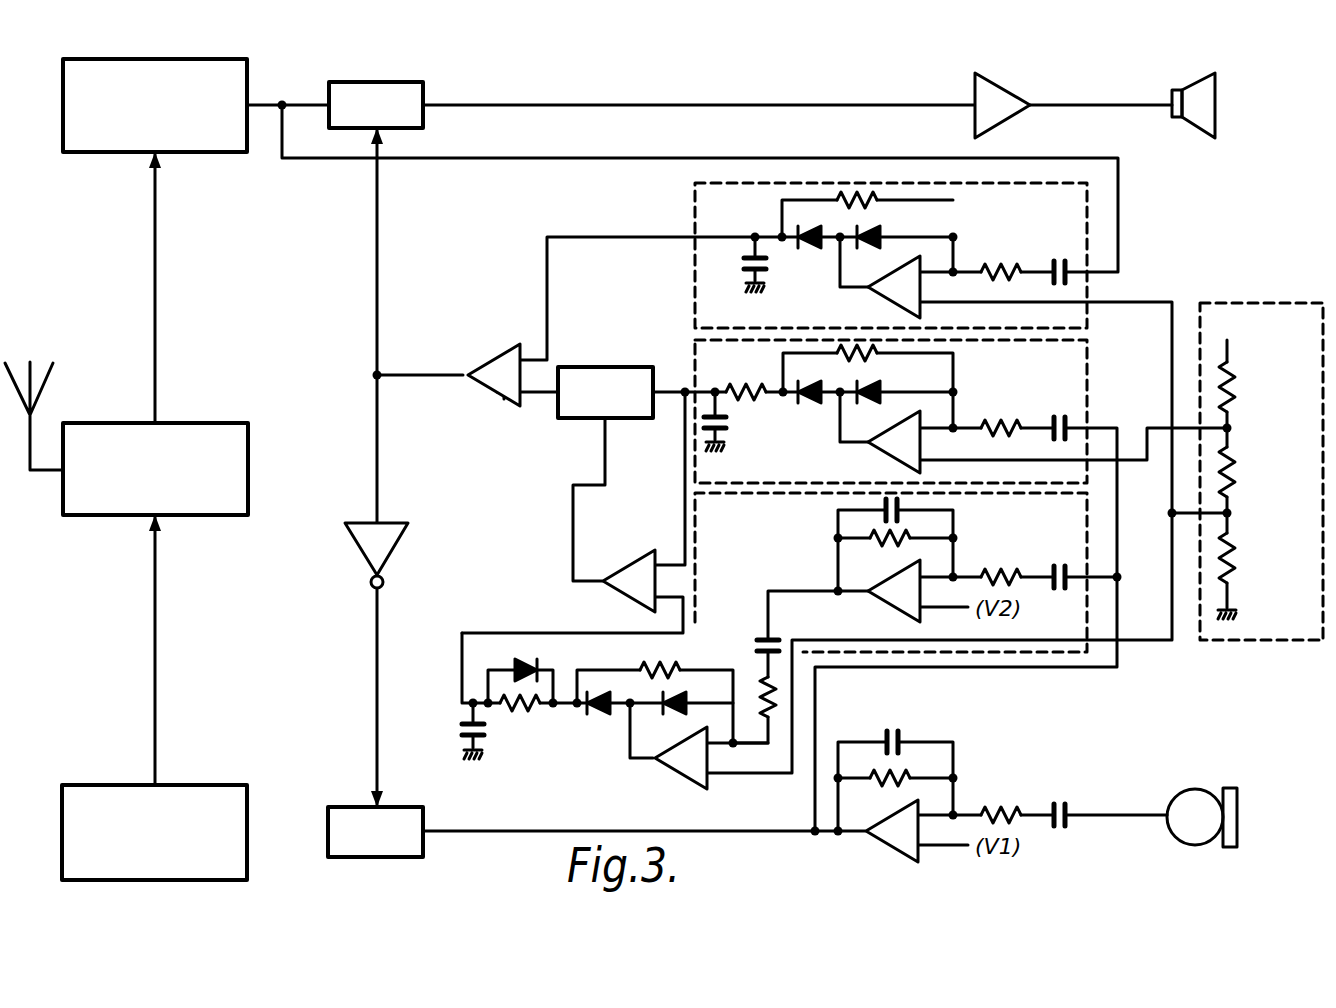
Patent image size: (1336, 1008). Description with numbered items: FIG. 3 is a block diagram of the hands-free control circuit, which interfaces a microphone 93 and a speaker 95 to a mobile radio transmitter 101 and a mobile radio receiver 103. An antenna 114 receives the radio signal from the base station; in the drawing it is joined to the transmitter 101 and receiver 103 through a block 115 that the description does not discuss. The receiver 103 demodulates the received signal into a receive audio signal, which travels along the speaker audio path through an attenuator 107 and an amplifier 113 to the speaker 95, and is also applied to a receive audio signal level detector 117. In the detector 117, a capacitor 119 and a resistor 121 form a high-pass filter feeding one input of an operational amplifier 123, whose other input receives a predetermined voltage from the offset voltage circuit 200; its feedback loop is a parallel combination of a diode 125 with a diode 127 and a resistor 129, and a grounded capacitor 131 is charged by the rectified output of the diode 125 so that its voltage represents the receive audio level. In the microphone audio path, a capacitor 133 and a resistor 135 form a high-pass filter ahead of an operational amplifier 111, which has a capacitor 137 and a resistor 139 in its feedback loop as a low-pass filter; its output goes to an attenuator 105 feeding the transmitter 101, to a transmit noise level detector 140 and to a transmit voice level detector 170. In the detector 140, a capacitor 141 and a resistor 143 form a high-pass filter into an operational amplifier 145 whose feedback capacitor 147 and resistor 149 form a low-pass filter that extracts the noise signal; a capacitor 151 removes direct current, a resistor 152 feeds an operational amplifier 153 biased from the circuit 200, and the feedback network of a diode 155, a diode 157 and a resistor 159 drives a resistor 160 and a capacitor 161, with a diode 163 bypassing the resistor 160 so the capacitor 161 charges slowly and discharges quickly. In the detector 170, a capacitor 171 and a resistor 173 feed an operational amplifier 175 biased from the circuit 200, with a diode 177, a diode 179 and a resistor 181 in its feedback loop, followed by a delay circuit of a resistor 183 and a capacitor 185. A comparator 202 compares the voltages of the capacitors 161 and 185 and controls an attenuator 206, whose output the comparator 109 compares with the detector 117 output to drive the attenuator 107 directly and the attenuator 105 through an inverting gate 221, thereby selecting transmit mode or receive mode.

The microphone 93 is at (1237, 800).
The speaker 95 is at (1216, 105).
The mobile radio transmitter 101 is at (220, 785).
The mobile radio receiver 103 is at (197, 153).
The attenuator 105 is at (345, 806).
The attenuator 107 is at (423, 118).
The comparator 109 is at (488, 350).
The operational amplifier 111 is at (888, 853).
The amplifier 113 is at (1005, 120).
The antenna 114 is at (32, 366).
The duplexer 115 is at (219, 423).
The receive audio signal level detector 117 is at (1090, 230).
The capacitor 119 is at (1058, 262).
The resistor 121 is at (998, 262).
The operational amplifier 123 is at (882, 300).
The diode 125 is at (878, 235).
The diode 127 is at (814, 248).
The resistor 129 is at (858, 194).
The capacitor 131 is at (742, 276).
The capacitor 133 is at (1068, 805).
The resistor 135 is at (1000, 805).
The capacitor 137 is at (903, 735).
The resistor 139 is at (905, 775).
The transmit noise level detector 140 is at (1090, 535).
The capacitor 141 is at (1057, 566).
The resistor 143 is at (998, 566).
The operational amplifier 145 is at (878, 601).
The capacitor 147 is at (888, 500).
The resistor 149 is at (900, 548).
The capacitor 151 is at (762, 638).
The resistor 152 is at (776, 697).
The operational amplifier 153 is at (668, 770).
The diode 155 is at (680, 713).
The diode 157 is at (596, 713).
The resistor 159 is at (672, 670).
The resistor 160 is at (527, 712).
The capacitor 161 is at (484, 738).
The diode 163 is at (540, 671).
The transmit voice level detector 170 is at (1090, 383).
The capacitor 171 is at (1058, 418).
The resistor 173 is at (998, 418).
The operational amplifier 175 is at (876, 454).
The diode 177 is at (883, 400).
The diode 179 is at (812, 404).
The resistor 181 is at (880, 358).
The resistor 183 is at (757, 404).
The capacitor 185 is at (722, 428).
The offset voltage circuit 200 is at (1287, 303).
The comparator 202 is at (618, 566).
The attenuator 206 is at (620, 366).
The inverting gate 221 is at (408, 538).